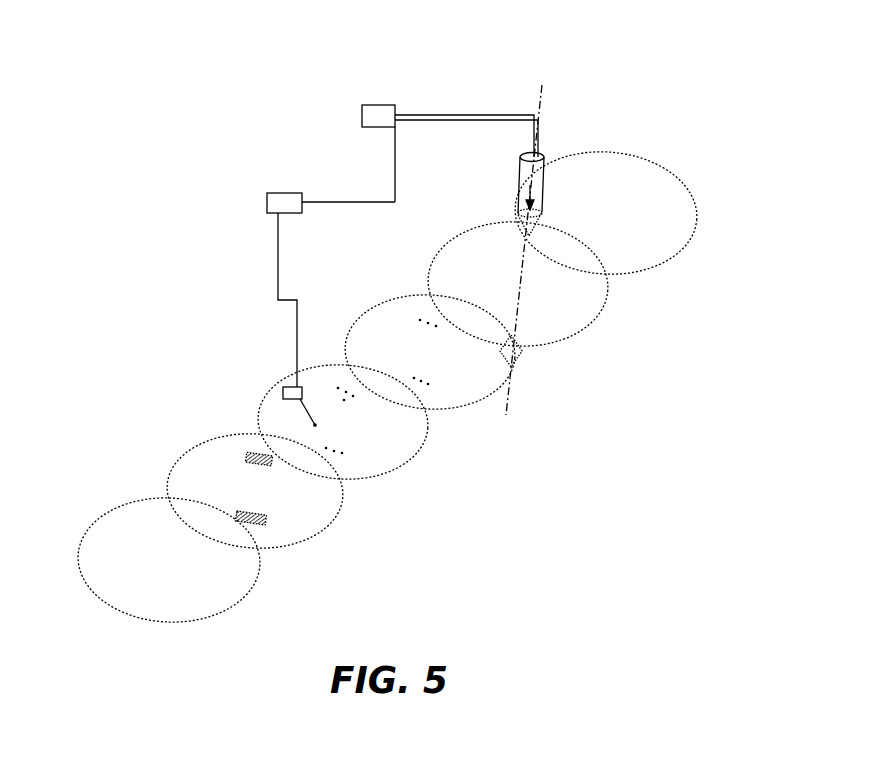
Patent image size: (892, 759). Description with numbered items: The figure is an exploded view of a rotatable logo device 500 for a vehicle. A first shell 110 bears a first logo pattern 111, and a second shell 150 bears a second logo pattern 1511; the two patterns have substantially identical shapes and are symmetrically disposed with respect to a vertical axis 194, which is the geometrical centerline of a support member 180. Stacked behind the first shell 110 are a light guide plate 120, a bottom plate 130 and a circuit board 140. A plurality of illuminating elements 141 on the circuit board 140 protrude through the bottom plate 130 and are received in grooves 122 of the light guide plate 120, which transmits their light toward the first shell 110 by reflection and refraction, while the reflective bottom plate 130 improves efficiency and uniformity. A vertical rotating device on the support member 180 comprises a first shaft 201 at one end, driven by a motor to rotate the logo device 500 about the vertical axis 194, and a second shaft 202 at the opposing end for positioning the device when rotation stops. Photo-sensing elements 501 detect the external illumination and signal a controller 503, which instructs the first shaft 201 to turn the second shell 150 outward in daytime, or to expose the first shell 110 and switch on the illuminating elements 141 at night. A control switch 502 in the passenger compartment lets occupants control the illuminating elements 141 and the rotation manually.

The first shell 110 is at (152, 520).
The first logo pattern 111 is at (160, 583).
The light guide plate 120 is at (220, 455).
The grooves 122 is at (252, 455).
The bottom plate 130 is at (318, 390).
The circuit board 140 is at (380, 332).
The illuminating elements 141 is at (436, 384).
The second shell 150 is at (586, 165).
The second logo pattern 1511 is at (660, 195).
The support member 180 is at (490, 247).
The vertical axis 194 is at (542, 85).
The first shaft 201 is at (520, 160).
The second shaft 202 is at (513, 362).
The logo device 500 is at (247, 225).
The photo-sensing elements 501 is at (327, 414).
The control switch 502 is at (362, 114).
The controller 503 is at (285, 193).